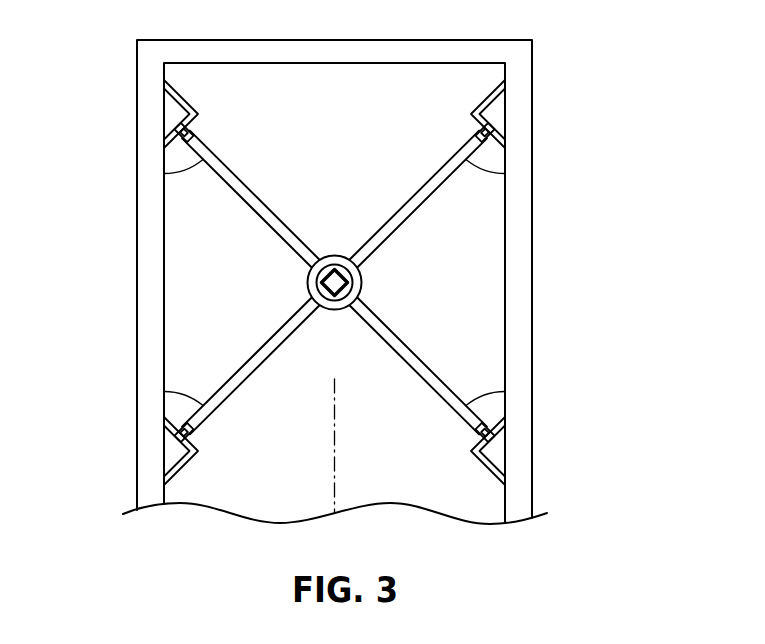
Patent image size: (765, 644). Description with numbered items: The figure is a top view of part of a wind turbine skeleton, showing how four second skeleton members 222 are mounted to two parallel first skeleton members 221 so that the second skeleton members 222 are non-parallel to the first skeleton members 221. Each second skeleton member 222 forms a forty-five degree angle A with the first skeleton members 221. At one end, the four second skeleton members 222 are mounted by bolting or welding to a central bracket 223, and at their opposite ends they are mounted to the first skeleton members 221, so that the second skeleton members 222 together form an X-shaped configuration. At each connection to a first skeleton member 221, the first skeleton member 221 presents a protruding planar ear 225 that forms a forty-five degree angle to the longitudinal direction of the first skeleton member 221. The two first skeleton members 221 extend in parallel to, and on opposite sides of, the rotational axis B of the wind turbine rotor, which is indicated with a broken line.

The first skeleton member 221 is at (320, 48).
The second skeleton member 222 is at (250, 190).
The central bracket 223 is at (334, 309).
The protruding planar ear 225 is at (176, 147).
The angle A is at (190, 176).
The rotational axis B is at (338, 470).